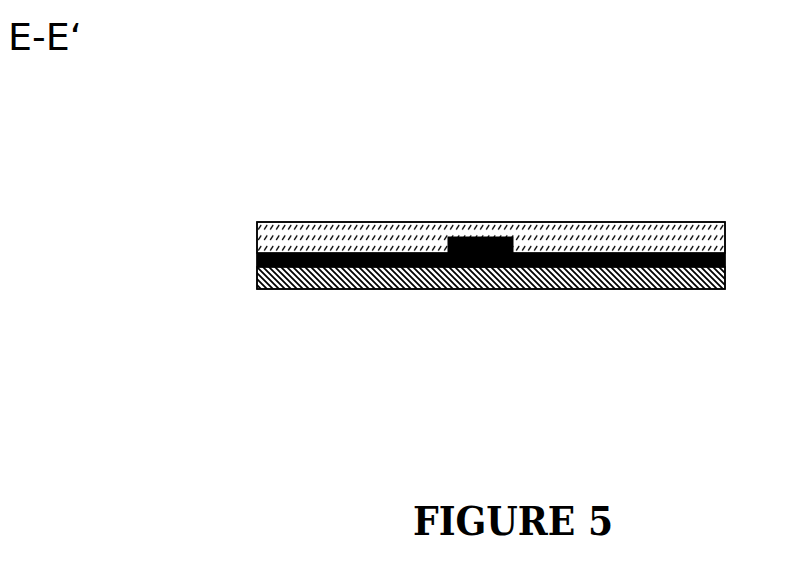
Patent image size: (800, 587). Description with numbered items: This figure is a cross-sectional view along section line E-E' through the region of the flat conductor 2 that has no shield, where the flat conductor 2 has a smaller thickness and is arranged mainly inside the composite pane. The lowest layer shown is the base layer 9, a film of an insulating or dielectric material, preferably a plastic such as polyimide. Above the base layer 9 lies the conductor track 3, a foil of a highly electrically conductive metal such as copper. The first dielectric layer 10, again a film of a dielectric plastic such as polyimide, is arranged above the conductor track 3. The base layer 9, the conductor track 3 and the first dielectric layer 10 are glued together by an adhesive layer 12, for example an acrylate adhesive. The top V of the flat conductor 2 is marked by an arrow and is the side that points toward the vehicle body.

The flat conductor 2 is at (237, 207).
The conductor track 3 is at (477, 259).
The base layer 9 is at (275, 275).
The first dielectric layer 10 is at (573, 237).
The adhesive layer 12 is at (332, 265).
The top V is at (355, 216).